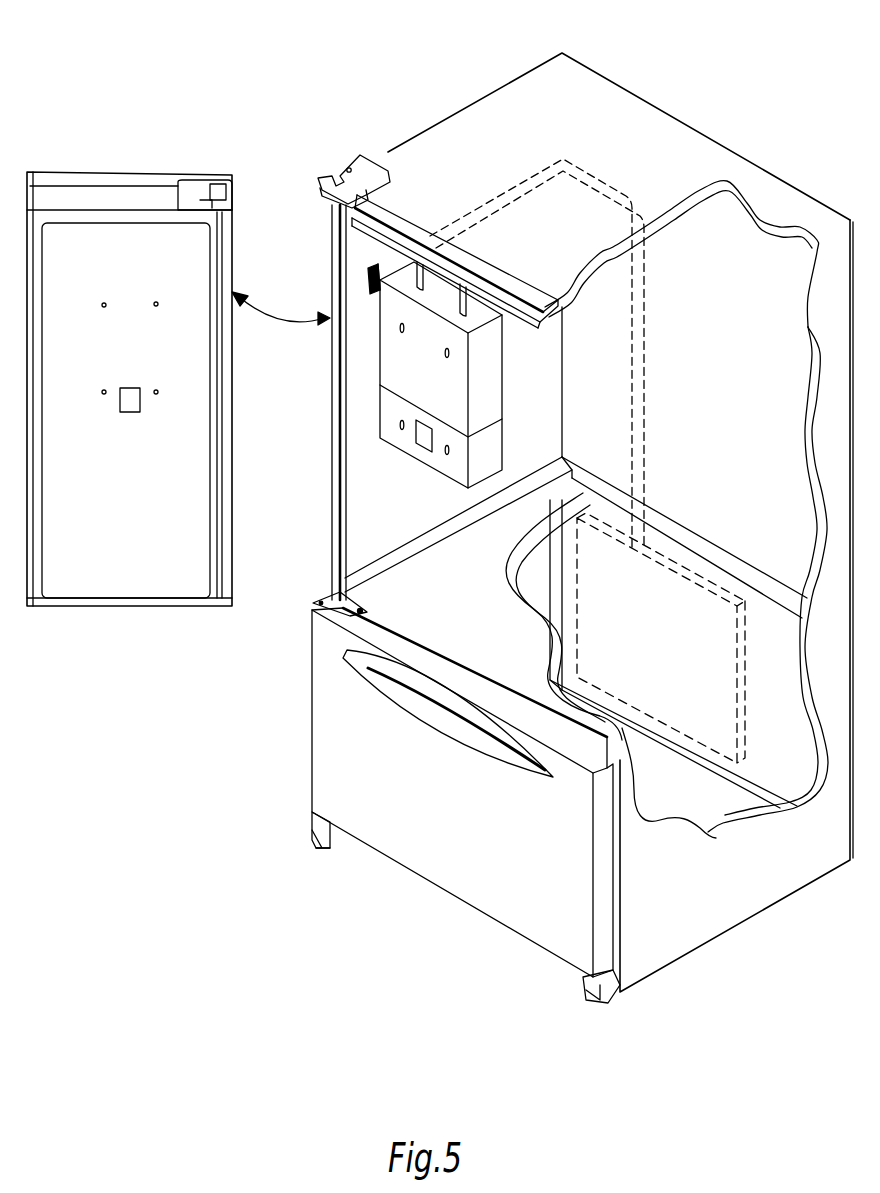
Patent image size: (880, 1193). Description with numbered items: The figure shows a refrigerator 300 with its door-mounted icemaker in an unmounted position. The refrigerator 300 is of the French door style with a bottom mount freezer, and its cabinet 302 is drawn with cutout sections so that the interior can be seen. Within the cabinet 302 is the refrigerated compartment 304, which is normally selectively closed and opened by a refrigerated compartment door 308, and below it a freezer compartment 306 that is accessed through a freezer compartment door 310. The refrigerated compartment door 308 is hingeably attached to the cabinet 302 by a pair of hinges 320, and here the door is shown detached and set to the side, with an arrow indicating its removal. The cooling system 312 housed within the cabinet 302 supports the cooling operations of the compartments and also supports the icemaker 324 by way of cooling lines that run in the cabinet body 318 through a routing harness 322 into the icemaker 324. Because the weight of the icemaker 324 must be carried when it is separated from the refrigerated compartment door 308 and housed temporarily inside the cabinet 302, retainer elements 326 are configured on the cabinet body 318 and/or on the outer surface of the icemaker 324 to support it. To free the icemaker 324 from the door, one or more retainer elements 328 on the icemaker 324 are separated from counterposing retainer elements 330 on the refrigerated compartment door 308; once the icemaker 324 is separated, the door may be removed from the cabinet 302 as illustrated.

The refrigerator 300 is at (438, 44).
The cabinet 302 is at (718, 152).
The refrigerated compartment 304 is at (768, 236).
The freezer compartment 306 is at (688, 800).
The refrigerated compartment door 308 is at (95, 184).
The freezer compartment door 310 is at (322, 722).
The cooling system 312 is at (745, 752).
The cabinet body 318 is at (732, 343).
The hinges 320 is at (360, 166).
The routing harness 322 is at (372, 276).
The icemaker 324 is at (497, 378).
The retainer elements 326 is at (428, 278).
The retainer elements 328 is at (446, 356).
The counterposing retainer elements 330 is at (155, 303).